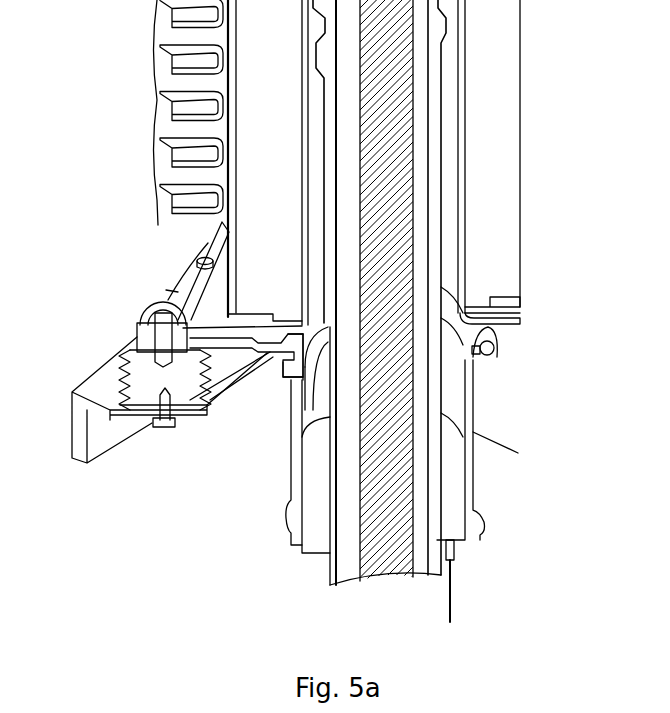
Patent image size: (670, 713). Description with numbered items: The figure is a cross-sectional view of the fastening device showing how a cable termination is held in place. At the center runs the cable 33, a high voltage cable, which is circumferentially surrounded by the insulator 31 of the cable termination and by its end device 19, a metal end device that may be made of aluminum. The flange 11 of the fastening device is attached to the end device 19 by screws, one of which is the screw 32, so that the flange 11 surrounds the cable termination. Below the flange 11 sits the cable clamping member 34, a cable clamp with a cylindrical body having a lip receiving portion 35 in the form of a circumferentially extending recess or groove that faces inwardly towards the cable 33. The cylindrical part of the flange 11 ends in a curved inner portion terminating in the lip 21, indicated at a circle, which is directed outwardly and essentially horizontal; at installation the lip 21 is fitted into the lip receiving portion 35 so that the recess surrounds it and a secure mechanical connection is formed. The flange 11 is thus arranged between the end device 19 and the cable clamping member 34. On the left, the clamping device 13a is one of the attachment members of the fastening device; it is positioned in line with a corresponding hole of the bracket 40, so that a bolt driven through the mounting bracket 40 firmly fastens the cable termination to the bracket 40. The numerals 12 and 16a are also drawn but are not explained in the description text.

The flange 11 is at (513, 313).
The link arm 12 is at (195, 285).
The clamping device 13a is at (121, 334).
The nut 16a is at (182, 393).
The end device 19 is at (172, 294).
The lip 21 is at (488, 360).
The insulator 31 is at (160, 165).
The screw 32 is at (198, 258).
The cable 33 is at (428, 581).
The cable clamping member 34 is at (297, 389).
The lip receiving portion 35 is at (270, 387).
The bracket 40 is at (104, 382).